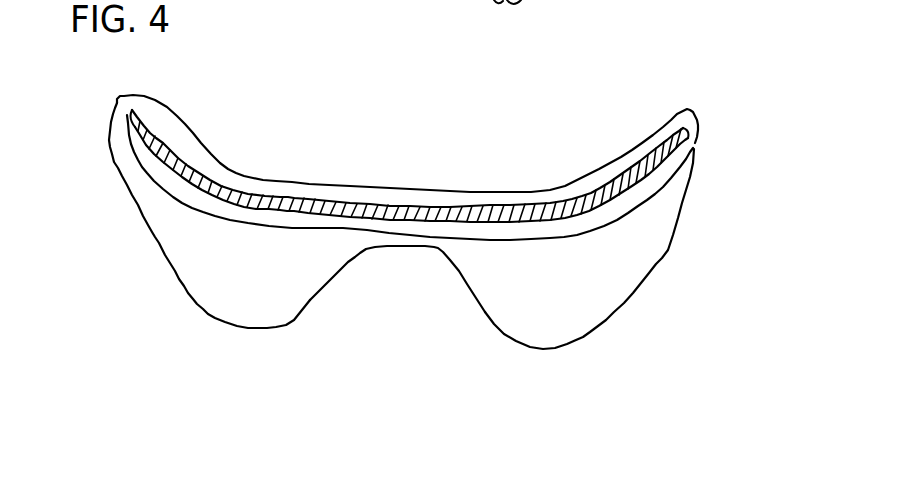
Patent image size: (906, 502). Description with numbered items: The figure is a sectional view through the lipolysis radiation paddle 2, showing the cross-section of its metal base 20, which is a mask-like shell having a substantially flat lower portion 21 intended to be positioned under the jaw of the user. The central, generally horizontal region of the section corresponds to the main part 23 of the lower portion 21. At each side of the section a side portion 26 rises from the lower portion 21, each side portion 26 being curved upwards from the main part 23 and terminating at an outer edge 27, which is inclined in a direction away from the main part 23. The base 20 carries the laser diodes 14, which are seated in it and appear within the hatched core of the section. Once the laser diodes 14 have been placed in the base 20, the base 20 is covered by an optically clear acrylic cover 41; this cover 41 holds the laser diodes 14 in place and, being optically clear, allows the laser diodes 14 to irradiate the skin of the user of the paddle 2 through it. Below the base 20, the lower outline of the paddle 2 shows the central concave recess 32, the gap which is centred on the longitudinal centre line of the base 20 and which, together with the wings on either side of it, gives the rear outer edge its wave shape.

The lipolysis radiation paddle 2 is at (440, 274).
The laser diodes 14 is at (366, 248).
The metal base 20 is at (490, 247).
The lower portion 21 is at (294, 188).
The main part 23 is at (407, 207).
The side portions 26 is at (392, 116).
The outer edge 27 is at (133, 100).
The recess 32 is at (390, 260).
The acrylic cover 41 is at (290, 217).